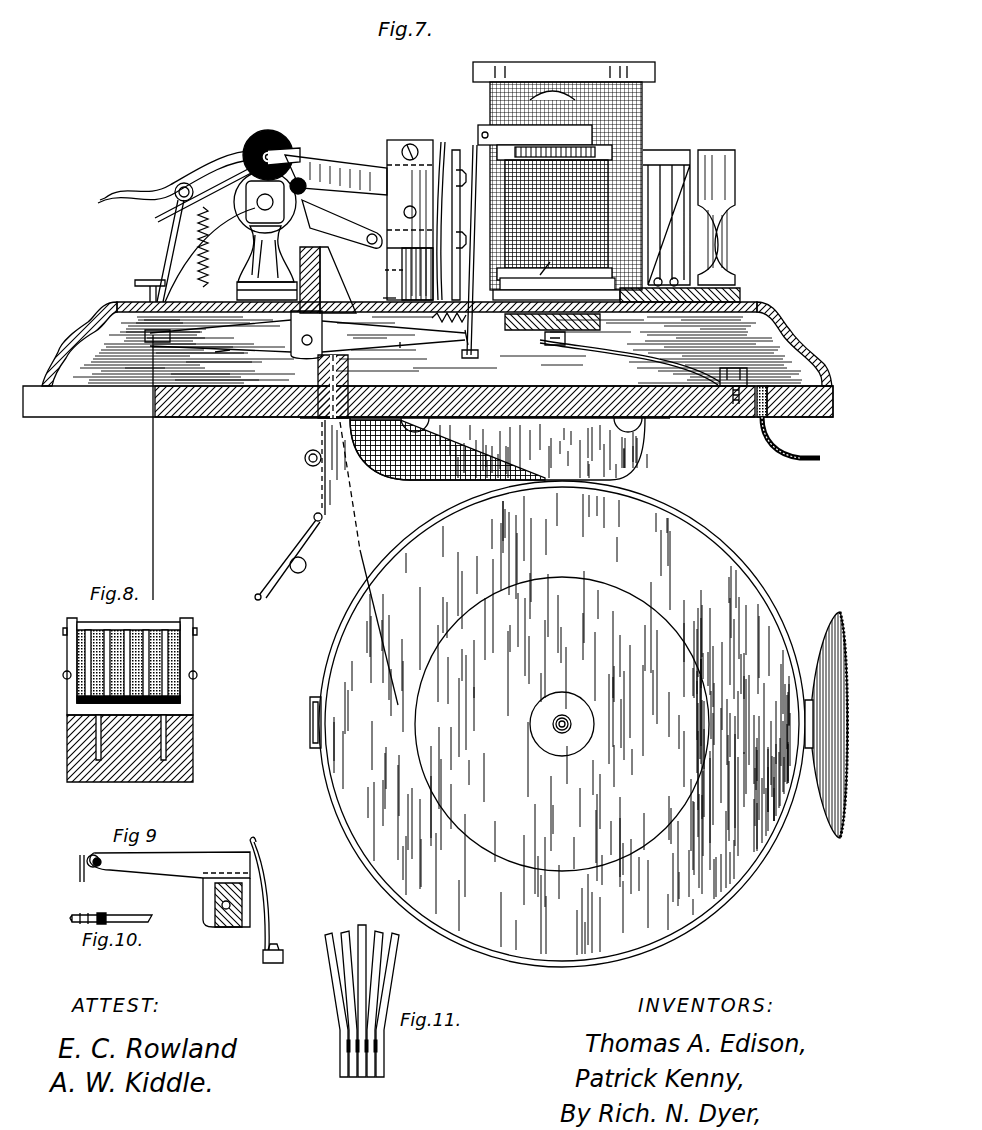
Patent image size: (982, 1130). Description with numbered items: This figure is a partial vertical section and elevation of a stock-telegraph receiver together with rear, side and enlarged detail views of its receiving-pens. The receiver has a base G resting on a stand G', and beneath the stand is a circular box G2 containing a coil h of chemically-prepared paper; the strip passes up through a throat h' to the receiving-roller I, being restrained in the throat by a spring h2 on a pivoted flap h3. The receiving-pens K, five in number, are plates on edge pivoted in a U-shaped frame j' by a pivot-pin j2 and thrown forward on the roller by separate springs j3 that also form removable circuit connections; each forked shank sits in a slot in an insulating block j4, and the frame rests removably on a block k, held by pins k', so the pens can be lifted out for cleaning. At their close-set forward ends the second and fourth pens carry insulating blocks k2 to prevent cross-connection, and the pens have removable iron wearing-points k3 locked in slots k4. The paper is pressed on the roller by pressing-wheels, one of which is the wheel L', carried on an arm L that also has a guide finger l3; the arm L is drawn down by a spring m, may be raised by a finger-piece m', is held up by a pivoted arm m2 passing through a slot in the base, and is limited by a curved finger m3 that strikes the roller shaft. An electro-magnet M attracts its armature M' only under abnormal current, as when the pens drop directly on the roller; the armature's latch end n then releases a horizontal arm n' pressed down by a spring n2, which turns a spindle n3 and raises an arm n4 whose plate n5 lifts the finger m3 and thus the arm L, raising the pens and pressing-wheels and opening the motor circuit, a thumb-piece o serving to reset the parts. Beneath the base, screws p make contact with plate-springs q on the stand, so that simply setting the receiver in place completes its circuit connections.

In FIG. 7, the base G is at (428, 350).
In FIG. 7, the stand G' is at (766, 422).
In FIG. 7, the circular box G2 is at (735, 555).
In FIG. 7, the electromagnet H is at (564, 168).
In FIG. 7, the receiving-roller I is at (243, 218).
In FIG. 7, the receiving-pens K is at (336, 193).
In FIG. 9, the receiving-pens K is at (170, 872).
In FIG. 11, the receiving-pens K is at (395, 963).
In FIG. 7, the arm L is at (183, 226).
In FIG. 7, the pressing-wheel L' is at (271, 148).
In FIG. 7, the electro-magnet M is at (539, 277).
In FIG. 7, the armature M' is at (465, 248).
In FIG. 7, the coil of chemically-prepared paper h is at (432, 603).
In FIG. 7, the throat h' is at (358, 530).
In FIG. 7, the spring h2 is at (290, 555).
In FIG. 7, the pivoted flap h3 is at (292, 575).
In FIG. 7, the U-shaped frame j' is at (415, 211).
In FIG. 8, the U-shaped frame j' is at (133, 646).
In FIG. 7, the pivot-pin j2 is at (404, 207).
In FIG. 8, the pivot-pin j2 is at (201, 674).
In FIG. 7, the springs j3 is at (451, 221).
In FIG. 9, the springs j3 is at (267, 900).
In FIG. 8, the insulating block j4 is at (63, 685).
In FIG. 9, the insulating block j4 is at (222, 909).
In FIG. 7, the block k is at (383, 293).
In FIG. 8, the block k is at (130, 709).
In FIG. 7, the pins k' is at (385, 270).
In FIG. 8, the pins k' is at (125, 733).
In FIG. 9, the insulating blocks k2 is at (99, 849).
In FIG. 10, the insulating blocks k2 is at (103, 909).
In FIG. 11, the insulating blocks k2 is at (340, 1047).
In FIG. 9, the iron wearing-points k3 is at (79, 878).
In FIG. 9, the slots k4 is at (86, 858).
In FIG. 10, the slots k4 is at (111, 909).
In FIG. 7, the finger l3 is at (195, 200).
In FIG. 7, the spring m is at (213, 247).
In FIG. 7, the finger-piece m' is at (103, 190).
In FIG. 7, the pivoted arm m2 is at (168, 255).
In FIG. 7, the curved finger m3 is at (319, 272).
In FIG. 7, the latch end n is at (318, 336).
In FIG. 7, the horizontal arm n' is at (398, 353).
In FIG. 7, the spring n2 is at (430, 320).
In FIG. 7, the spindle n3 is at (306, 334).
In FIG. 7, the arm n4 is at (215, 358).
In FIG. 7, the plate n5 is at (146, 341).
In FIG. 7, the thumb-piece o is at (135, 283).
In FIG. 7, the screws p is at (540, 343).
In FIG. 7, the springs q is at (602, 350).